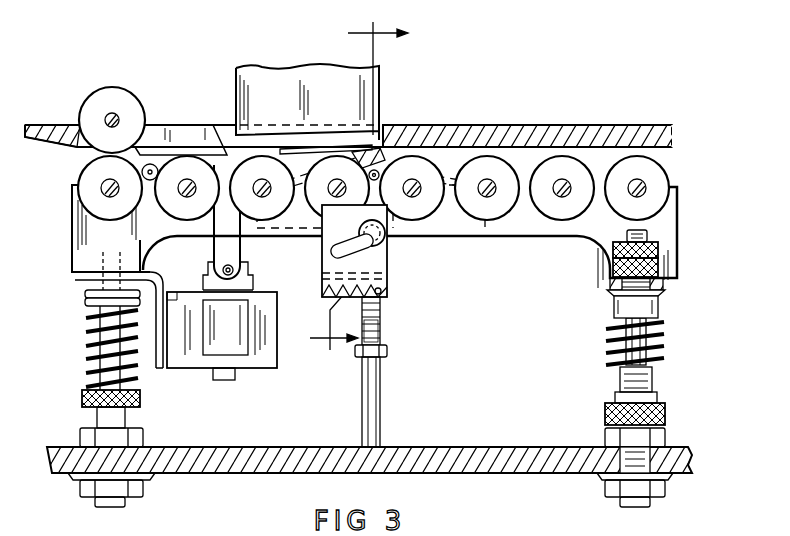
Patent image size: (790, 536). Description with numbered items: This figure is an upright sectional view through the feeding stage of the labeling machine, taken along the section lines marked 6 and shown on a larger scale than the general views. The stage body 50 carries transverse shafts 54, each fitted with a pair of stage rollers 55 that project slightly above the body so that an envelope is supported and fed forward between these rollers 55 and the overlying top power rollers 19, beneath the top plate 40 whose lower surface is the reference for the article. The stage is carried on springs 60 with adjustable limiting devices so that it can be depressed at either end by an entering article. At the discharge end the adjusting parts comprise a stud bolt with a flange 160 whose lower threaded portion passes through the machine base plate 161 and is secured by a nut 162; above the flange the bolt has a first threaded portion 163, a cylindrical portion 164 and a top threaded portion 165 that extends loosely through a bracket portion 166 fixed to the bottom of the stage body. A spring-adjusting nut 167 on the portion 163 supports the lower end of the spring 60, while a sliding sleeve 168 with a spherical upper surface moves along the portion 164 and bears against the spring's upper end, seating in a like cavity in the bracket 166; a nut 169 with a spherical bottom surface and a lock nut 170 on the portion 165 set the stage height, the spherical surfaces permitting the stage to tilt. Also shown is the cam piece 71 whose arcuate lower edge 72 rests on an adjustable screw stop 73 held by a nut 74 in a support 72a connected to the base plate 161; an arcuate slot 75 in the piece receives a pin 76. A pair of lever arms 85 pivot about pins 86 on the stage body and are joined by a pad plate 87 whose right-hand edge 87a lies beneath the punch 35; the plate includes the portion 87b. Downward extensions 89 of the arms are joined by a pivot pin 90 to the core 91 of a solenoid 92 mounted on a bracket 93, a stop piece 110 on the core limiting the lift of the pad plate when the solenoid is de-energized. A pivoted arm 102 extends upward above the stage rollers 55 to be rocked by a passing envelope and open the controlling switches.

The top power rollers 19 is at (98, 97).
The punch 35 is at (258, 75).
The top plate 40 is at (553, 128).
The stage body 50 is at (545, 240).
The transverse shafts 54 is at (566, 200).
The stage rollers 55 is at (95, 200).
The springs 60 is at (87, 367).
The cam piece 71 is at (385, 262).
The lower edge 72 is at (382, 305).
The support 72a is at (381, 401).
The adjustable screw stop 73 is at (380, 335).
The nut 74 is at (356, 352).
The slot 75 is at (336, 253).
The pin 76 is at (388, 243).
The lever arms 85 is at (153, 165).
The pins 86 is at (153, 166).
The pad plate 87 is at (293, 149).
The right-hand edge 87a is at (340, 152).
The plate 87b is at (183, 131).
The downward extensions 89 is at (215, 254).
The pivot pin 90 is at (236, 268).
The core 91 is at (255, 273).
The solenoid 92 is at (262, 370).
The bracket 93 is at (163, 372).
The pivoted arm 102 is at (358, 150).
The stop piece 110 is at (224, 381).
The flange 160 is at (665, 442).
The base plate 161 is at (480, 467).
The nut 162 is at (665, 490).
The first threaded portion 163 is at (655, 378).
The cylindrical portion 164 is at (664, 348).
The top threaded portion 165 is at (648, 230).
The bracket portion 166 is at (665, 285).
The spring-adjusting nut 167 is at (605, 416).
The sliding sleeve 168 is at (658, 305).
The nut 169 is at (662, 268).
The lock nut 170 is at (658, 252).
The section line 6 is at (351, 186).